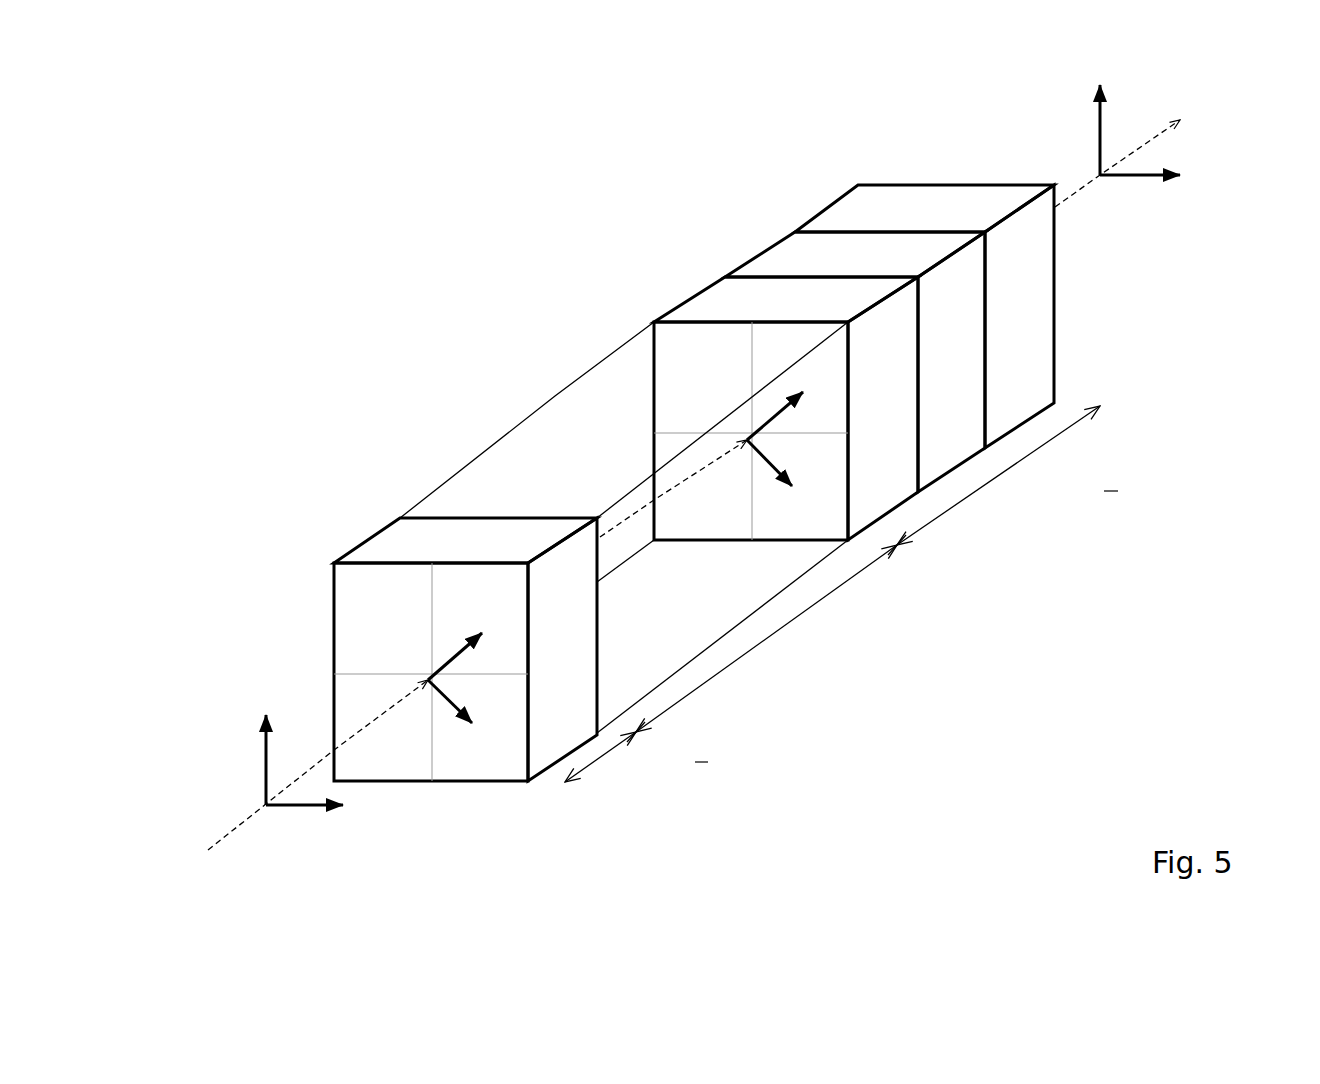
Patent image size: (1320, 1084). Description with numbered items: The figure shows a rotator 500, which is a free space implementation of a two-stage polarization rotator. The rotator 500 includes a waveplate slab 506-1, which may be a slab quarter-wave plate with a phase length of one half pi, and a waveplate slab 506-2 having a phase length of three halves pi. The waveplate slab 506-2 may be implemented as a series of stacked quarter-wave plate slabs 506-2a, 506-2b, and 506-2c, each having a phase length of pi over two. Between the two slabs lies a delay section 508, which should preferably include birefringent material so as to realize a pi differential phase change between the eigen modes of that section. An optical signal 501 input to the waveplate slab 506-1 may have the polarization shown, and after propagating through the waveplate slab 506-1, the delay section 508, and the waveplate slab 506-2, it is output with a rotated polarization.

The rotator 500 is at (186, 273).
The optical signal 501 is at (237, 827).
The waveplate slab 506-1 is at (367, 543).
The waveplate slab 506-2 is at (797, 329).
The quarter-wave plate slab 506-2a is at (826, 306).
The quarter-wave plate slab 506-2b is at (893, 261).
The quarter-wave plate slab 506-2c is at (924, 316).
The delay section 508 is at (555, 396).